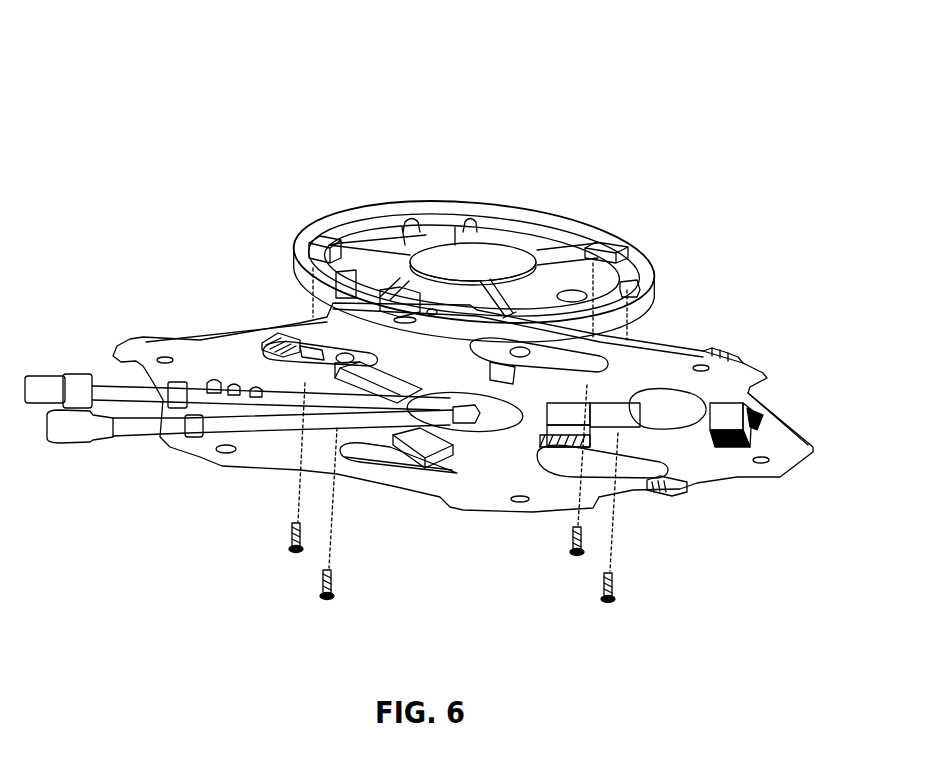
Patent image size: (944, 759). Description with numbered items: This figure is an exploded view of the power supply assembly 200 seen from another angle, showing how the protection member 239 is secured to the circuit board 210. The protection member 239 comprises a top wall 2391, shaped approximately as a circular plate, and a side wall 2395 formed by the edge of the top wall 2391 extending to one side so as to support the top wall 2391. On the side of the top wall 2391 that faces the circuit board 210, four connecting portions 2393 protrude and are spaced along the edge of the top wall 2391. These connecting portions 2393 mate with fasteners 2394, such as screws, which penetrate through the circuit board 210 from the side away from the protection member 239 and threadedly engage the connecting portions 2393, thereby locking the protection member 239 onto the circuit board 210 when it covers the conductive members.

The power supply assembly 200 is at (488, 61).
The circuit board 210 is at (728, 383).
The protection member 239 is at (539, 242).
The top wall 2391 is at (567, 262).
The connecting portions 2393 is at (640, 289).
The side wall 2395 is at (642, 262).
The fasteners 2394 is at (625, 598).